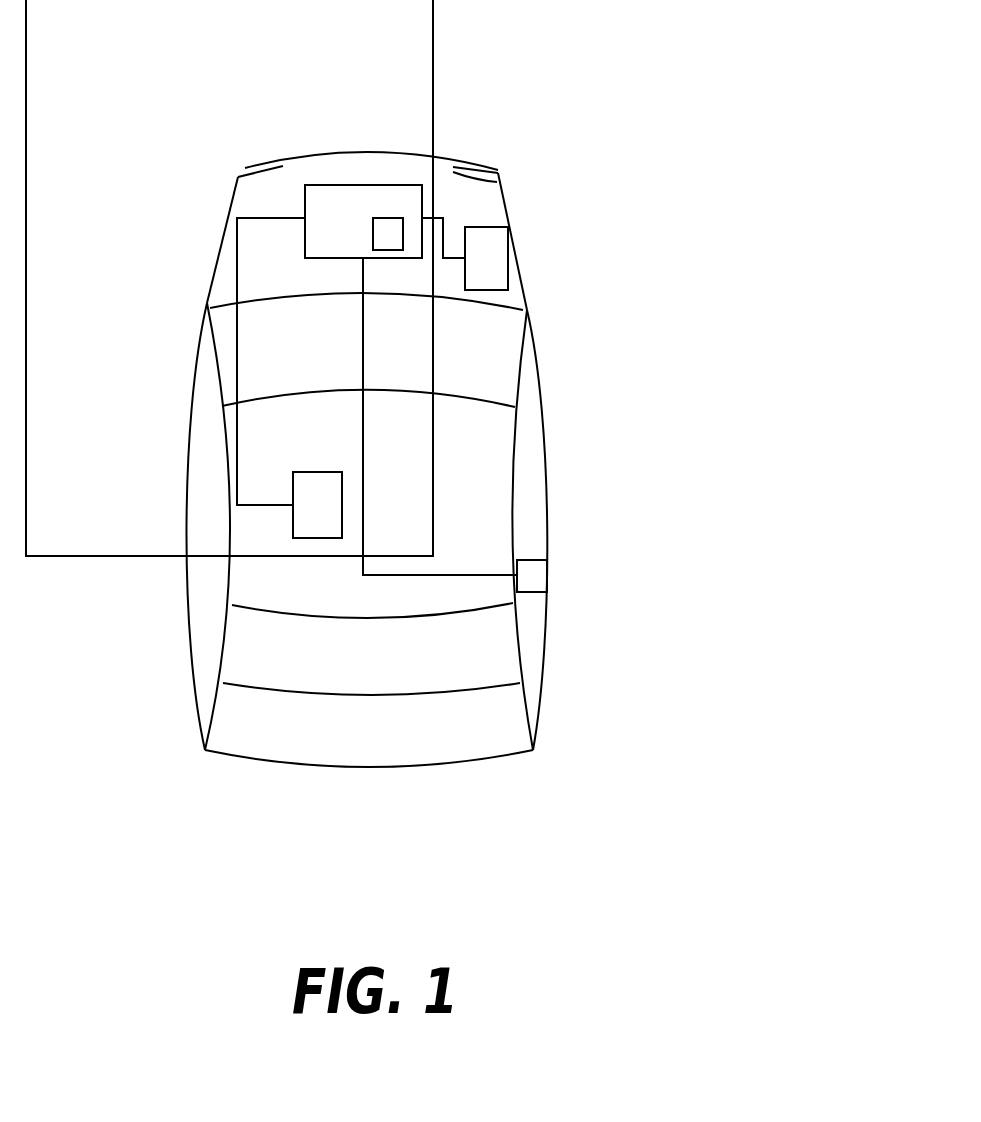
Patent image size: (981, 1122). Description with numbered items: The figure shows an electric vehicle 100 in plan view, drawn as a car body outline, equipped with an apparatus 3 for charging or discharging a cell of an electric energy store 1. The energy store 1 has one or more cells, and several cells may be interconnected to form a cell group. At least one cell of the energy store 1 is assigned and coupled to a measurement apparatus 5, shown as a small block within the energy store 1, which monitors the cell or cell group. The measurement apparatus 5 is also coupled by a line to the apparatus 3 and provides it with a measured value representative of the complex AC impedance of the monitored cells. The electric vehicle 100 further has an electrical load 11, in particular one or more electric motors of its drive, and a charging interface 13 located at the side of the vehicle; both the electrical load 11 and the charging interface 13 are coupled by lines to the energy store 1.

The electric energy store 1 is at (318, 217).
The apparatus 3 is at (300, 527).
The measurement apparatus 5 is at (388, 230).
The electrical load 11 is at (498, 276).
The charging interface 13 is at (538, 575).
The electric vehicle 100 is at (582, 193).